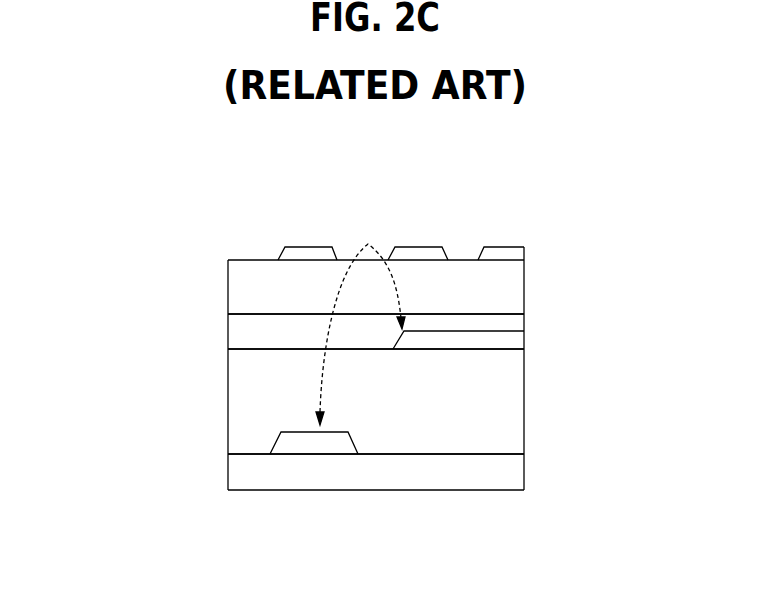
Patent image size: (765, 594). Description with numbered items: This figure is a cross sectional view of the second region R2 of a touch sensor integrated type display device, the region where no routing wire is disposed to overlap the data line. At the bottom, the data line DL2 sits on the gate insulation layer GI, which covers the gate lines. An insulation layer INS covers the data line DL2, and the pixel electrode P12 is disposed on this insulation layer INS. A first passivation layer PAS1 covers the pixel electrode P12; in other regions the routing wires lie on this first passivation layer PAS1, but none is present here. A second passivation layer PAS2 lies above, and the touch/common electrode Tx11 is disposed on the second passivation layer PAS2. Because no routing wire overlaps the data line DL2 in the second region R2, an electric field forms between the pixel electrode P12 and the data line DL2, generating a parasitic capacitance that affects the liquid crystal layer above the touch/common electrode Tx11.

The second region R2 is at (277, 176).
The touch/common electrode Tx11 is at (307, 250).
The second passivation layer PAS2 is at (238, 287).
The first passivation layer PAS1 is at (238, 330).
The insulation layer INS is at (238, 394).
The gate insulation layer GI is at (238, 472).
The pixel electrode P12 is at (518, 339).
The data line DL2 is at (314, 455).